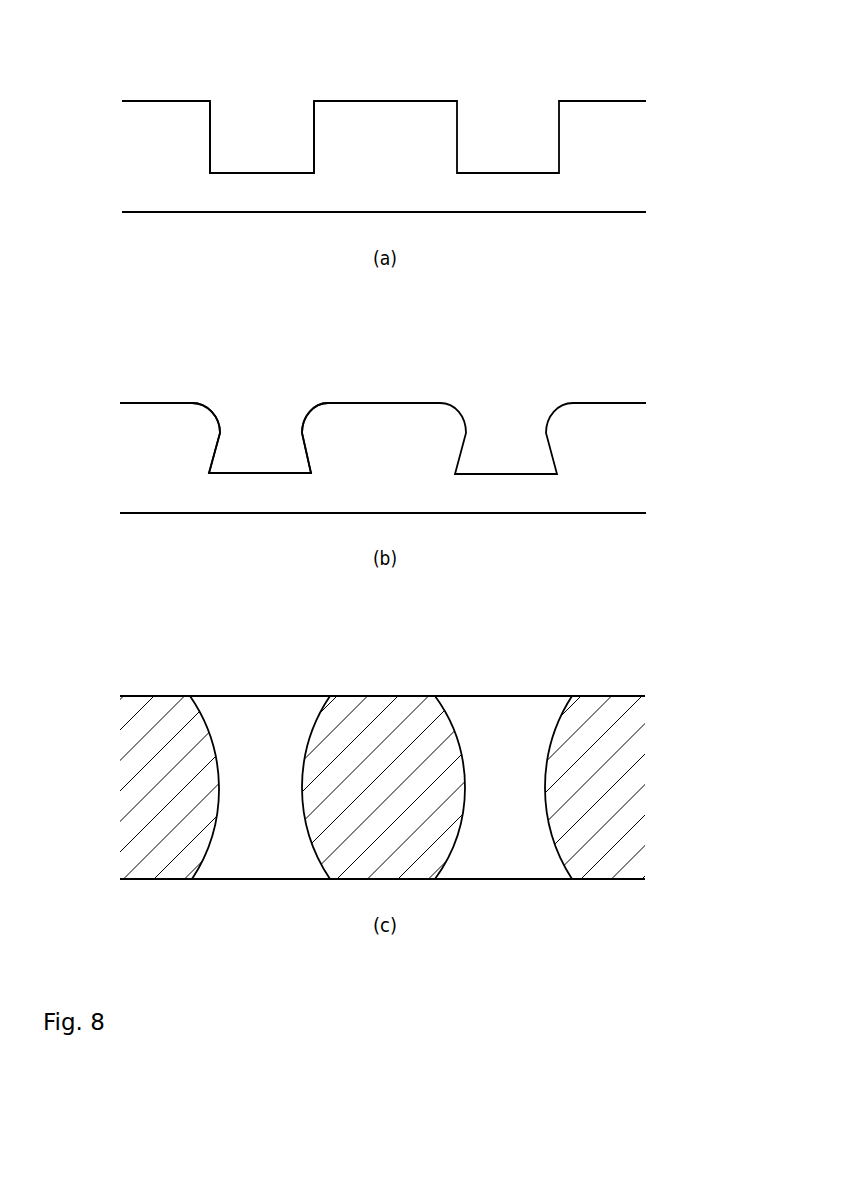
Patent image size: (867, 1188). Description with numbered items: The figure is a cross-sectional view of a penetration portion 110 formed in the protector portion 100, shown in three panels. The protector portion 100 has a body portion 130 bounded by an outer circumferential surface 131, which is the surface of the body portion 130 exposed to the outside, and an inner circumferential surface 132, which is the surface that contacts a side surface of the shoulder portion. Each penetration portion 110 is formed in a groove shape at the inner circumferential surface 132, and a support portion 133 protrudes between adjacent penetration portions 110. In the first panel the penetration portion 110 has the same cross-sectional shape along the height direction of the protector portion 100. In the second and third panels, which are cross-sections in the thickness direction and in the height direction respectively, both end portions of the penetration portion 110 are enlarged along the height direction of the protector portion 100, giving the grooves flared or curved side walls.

The protector portion 100 is at (412, 442).
The penetration portion 110 is at (270, 132).
The body portion 130 is at (632, 155).
The outer circumferential surface 131 is at (632, 213).
The inner circumferential surface 132 is at (634, 102).
The support portion 133 is at (376, 118).